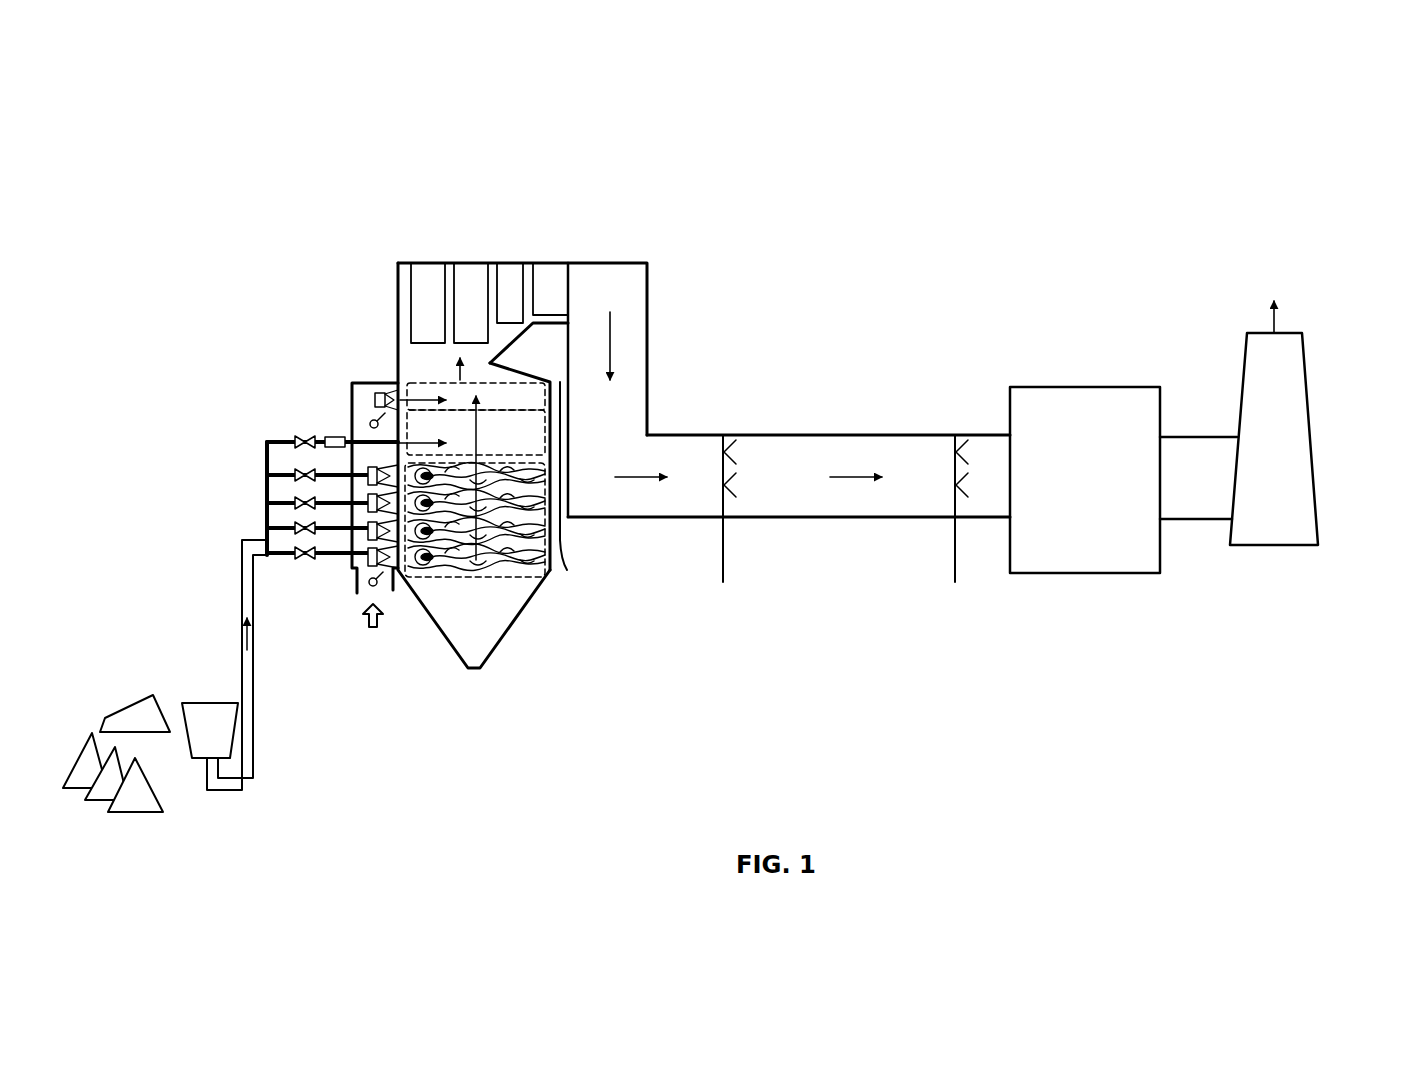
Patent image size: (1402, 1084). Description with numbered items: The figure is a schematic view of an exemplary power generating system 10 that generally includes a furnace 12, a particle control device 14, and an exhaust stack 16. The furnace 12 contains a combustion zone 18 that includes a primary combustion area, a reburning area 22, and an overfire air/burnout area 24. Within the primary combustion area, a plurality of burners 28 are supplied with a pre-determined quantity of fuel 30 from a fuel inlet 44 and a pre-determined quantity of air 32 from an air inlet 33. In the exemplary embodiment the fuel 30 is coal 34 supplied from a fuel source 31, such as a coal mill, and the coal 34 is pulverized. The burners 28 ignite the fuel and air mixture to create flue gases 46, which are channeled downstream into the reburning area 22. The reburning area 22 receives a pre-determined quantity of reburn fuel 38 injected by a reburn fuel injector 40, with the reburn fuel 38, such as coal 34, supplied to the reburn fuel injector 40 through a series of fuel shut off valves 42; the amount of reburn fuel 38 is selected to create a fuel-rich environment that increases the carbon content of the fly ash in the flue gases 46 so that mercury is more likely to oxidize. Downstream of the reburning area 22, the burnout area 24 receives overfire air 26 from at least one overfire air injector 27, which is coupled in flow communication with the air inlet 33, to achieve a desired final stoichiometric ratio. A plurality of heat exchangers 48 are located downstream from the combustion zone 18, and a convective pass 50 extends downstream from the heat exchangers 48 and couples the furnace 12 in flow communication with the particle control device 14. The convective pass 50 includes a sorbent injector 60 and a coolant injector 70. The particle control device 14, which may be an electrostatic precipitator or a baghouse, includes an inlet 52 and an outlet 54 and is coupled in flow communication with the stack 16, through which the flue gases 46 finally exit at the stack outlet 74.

The power generating system 10 is at (203, 168).
The furnace 12 is at (503, 650).
The particle control device 14 is at (1085, 574).
The exhaust stack 16 is at (1305, 362).
The combustion zone 18 is at (565, 476).
The reburning area 22 is at (513, 420).
The overfire air/burnout area 24 is at (430, 382).
The overfire air 26 is at (360, 383).
The overfire air injector 27 is at (374, 396).
The burners 28 is at (338, 476).
The fuel 30 is at (241, 635).
The fuel source 31 is at (88, 741).
The air 32 is at (372, 632).
The air inlet 33 is at (386, 590).
The coal 34 is at (142, 712).
The reburn fuel 38 is at (415, 444).
The reburn fuel injector 40 is at (365, 436).
The fuel shut off valves 42 is at (268, 447).
The fuel inlet 44 is at (210, 703).
The flue gases 46 is at (432, 380).
The heat exchangers 48 is at (427, 268).
The convective pass 50 is at (604, 263).
The inlet 52 is at (1003, 482).
The outlet 54 is at (1167, 477).
The sorbent injector 60 is at (723, 530).
The coolant injector 70 is at (955, 542).
The stack outlet 74 is at (1268, 330).